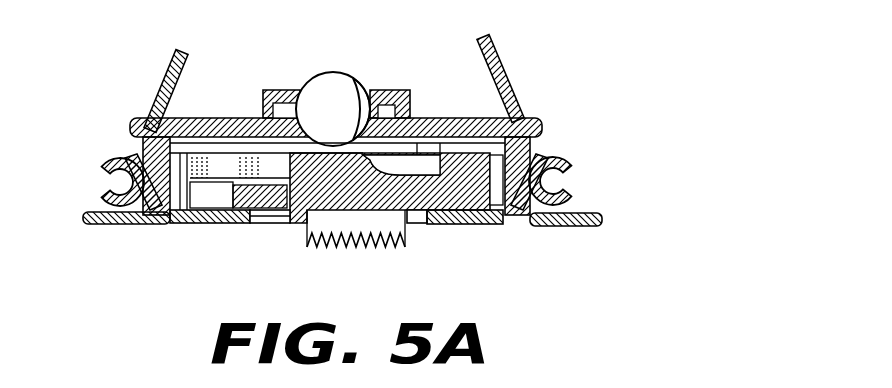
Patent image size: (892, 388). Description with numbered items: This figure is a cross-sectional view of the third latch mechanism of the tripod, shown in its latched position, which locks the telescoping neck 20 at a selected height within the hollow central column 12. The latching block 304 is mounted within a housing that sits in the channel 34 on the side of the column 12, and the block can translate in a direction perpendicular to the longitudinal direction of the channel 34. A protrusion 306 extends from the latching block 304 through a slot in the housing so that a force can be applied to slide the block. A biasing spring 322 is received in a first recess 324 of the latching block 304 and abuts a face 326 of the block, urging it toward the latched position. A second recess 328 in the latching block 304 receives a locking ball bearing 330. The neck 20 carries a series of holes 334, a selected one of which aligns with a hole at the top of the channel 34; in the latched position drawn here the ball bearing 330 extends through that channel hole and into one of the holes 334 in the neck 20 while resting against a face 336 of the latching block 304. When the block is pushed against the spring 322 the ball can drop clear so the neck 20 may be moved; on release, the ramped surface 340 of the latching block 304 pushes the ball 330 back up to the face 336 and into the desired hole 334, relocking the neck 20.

The central column 12 is at (550, 127).
The neck 20 is at (513, 87).
The channel 34 is at (533, 145).
The latching block 304 is at (484, 212).
The protrusion 306 is at (364, 235).
The biasing spring 322 is at (143, 146).
The first recess 324 is at (226, 170).
The face 326 is at (291, 226).
The second recess 328 is at (427, 162).
The ball bearing 330 is at (331, 100).
The holes 334 is at (298, 90).
The face 336 is at (356, 88).
The ramped surface 340 is at (400, 213).